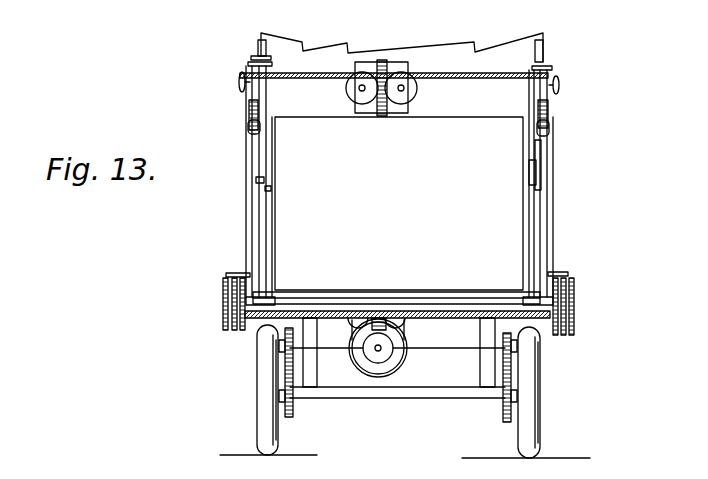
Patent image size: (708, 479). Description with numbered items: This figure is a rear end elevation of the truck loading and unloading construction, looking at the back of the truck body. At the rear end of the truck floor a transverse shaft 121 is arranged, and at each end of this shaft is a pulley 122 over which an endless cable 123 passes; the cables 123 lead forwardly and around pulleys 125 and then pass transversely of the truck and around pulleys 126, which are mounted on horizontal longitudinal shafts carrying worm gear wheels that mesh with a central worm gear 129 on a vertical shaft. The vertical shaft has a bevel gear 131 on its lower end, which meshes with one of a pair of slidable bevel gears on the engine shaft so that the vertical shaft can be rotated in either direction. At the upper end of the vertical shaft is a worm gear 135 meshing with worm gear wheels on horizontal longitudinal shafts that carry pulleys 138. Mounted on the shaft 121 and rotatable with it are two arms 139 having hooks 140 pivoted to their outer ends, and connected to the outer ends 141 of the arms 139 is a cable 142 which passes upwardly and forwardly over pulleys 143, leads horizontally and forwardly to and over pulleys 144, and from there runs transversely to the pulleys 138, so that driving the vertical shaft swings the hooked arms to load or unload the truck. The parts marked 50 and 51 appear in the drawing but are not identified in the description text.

The support block 50 is at (530, 172).
The panel 51 is at (498, 237).
The transverse shaft 121 is at (438, 305).
The pulley 122 is at (575, 303).
The endless cable 123 is at (535, 322).
The pulley 125 is at (565, 273).
The pulley 126 is at (397, 313).
The central worm gear 129 is at (363, 348).
The bevel gear 131 is at (408, 335).
The worm gear 135 is at (381, 72).
The pulley 138 is at (400, 100).
The arm 139 is at (550, 205).
The hook 140 is at (541, 157).
The outer end 141 is at (553, 133).
The cable 142 is at (553, 105).
The pulley 143 is at (565, 88).
The pulley 144 is at (553, 70).